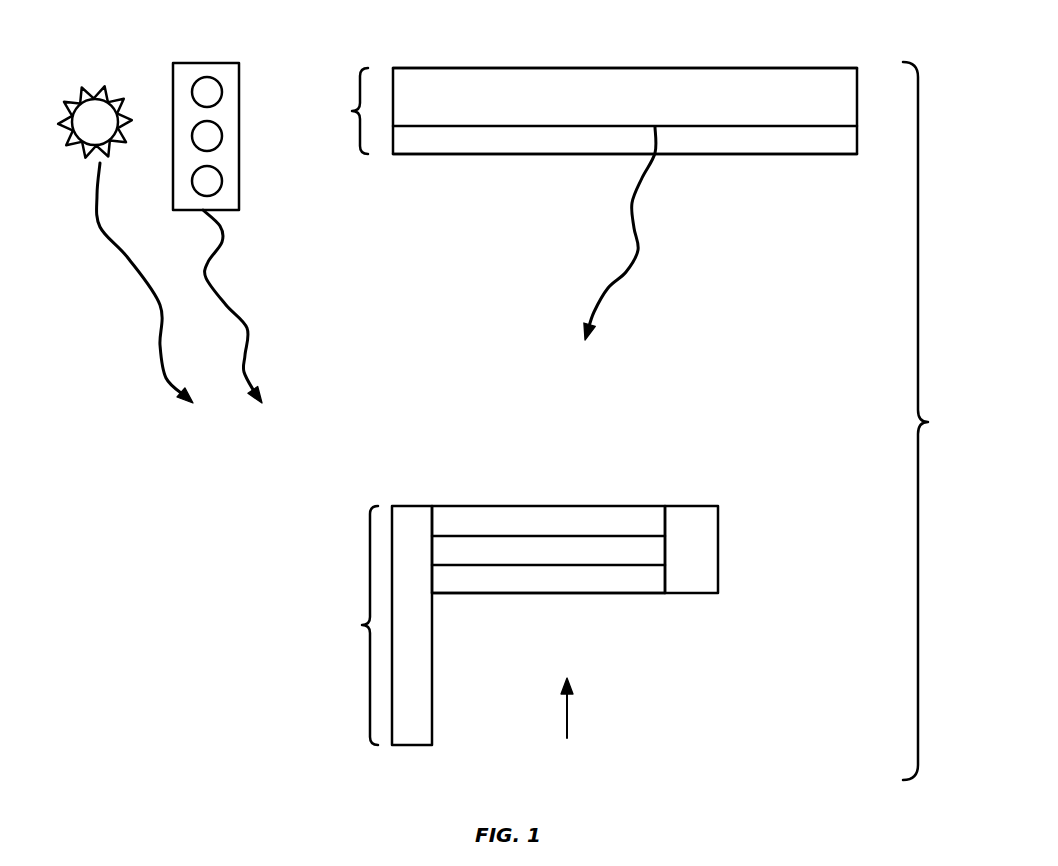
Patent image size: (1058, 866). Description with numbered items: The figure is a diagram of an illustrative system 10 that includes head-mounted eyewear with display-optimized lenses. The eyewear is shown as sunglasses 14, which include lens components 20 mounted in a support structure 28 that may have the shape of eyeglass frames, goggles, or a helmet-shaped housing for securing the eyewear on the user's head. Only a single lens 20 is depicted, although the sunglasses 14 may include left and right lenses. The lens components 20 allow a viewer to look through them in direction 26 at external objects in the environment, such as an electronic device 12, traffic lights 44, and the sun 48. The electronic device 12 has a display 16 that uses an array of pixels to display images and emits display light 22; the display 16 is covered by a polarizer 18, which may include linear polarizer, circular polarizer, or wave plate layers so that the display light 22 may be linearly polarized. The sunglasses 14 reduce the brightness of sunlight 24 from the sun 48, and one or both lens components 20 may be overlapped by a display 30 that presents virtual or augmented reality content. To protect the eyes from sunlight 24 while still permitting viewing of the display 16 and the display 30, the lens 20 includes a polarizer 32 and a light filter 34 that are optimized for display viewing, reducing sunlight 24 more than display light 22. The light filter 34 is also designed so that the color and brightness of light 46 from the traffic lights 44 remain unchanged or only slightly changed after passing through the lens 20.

The system 10 is at (930, 421).
The electronic device 12 is at (590, 83).
The sunglasses 14 is at (522, 585).
The display 16 is at (684, 82).
The polarizer 18 is at (722, 135).
The lens components 20 is at (480, 481).
The display light 22 is at (638, 257).
The sunlight 24 is at (105, 246).
The direction 26 is at (570, 713).
The support structure 28 is at (690, 512).
The display 30 is at (558, 512).
The polarizer 32 is at (577, 557).
The light filter 34 is at (512, 590).
The traffic lights 44 is at (239, 77).
The light 46 is at (207, 270).
The sun 48 is at (83, 135).